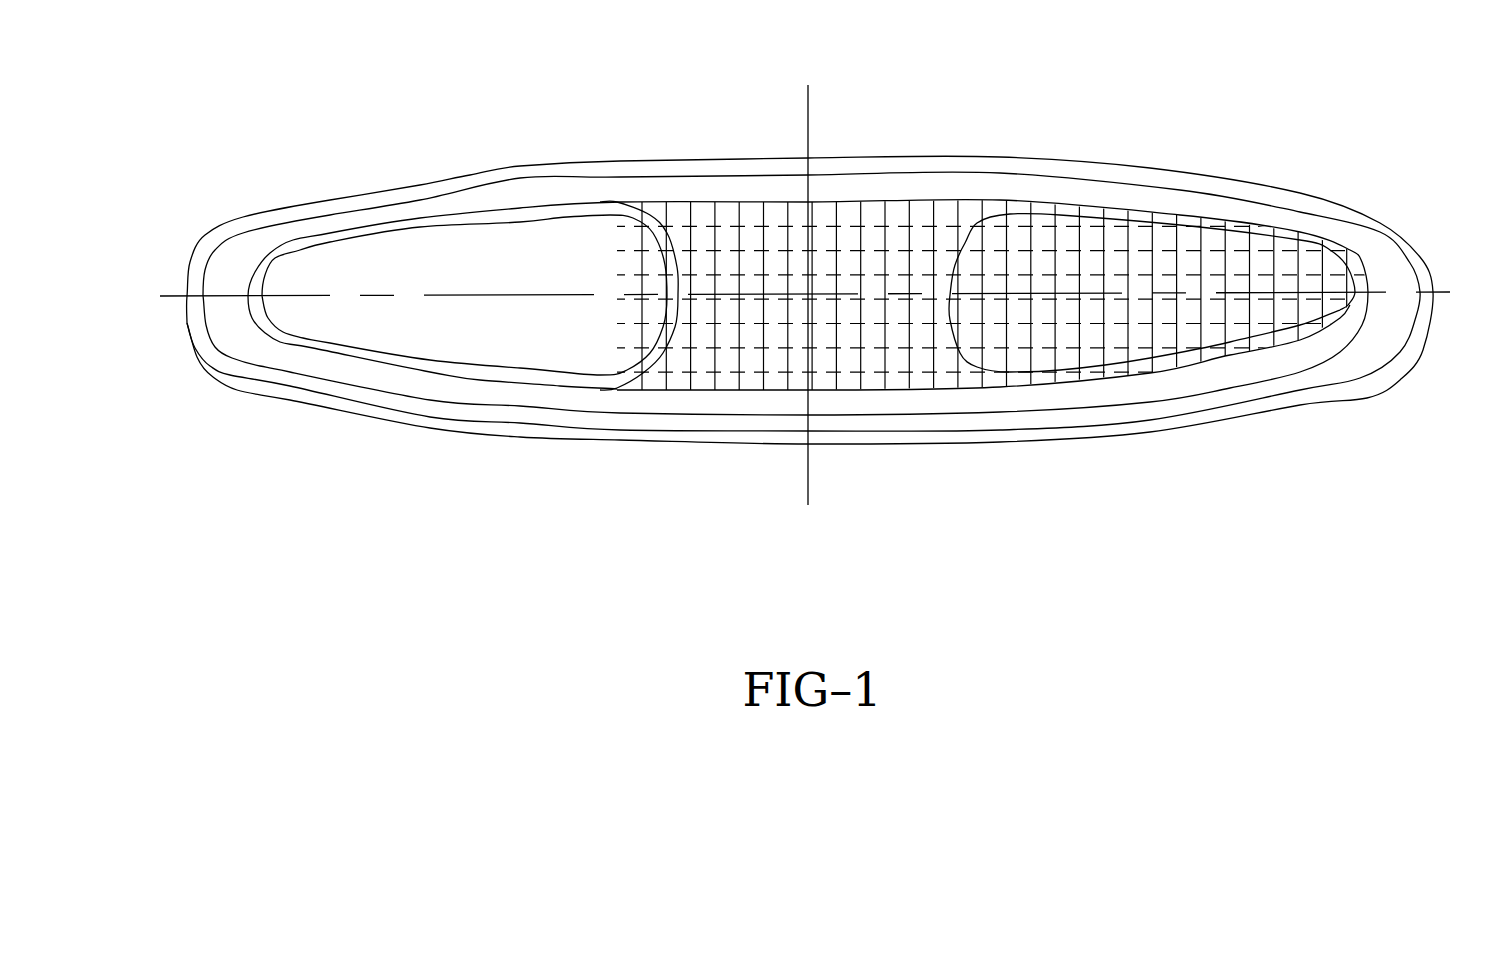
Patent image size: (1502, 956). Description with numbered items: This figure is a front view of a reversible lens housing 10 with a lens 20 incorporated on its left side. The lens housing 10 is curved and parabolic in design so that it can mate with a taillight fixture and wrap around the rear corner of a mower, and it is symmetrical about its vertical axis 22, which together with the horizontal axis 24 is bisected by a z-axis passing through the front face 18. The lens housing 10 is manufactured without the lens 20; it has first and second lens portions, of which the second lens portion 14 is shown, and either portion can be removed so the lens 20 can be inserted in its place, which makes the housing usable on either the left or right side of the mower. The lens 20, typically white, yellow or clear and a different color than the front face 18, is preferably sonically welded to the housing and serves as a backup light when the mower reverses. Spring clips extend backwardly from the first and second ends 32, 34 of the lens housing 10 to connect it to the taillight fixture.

The lens housing 10 is at (377, 438).
The second lens portion 14 is at (1090, 265).
The front face 18 is at (677, 378).
The lens 20 is at (484, 248).
The vertical axis 22 is at (810, 142).
The horizontal axis 24 is at (432, 293).
The first end 32 is at (188, 322).
The second end 34 is at (1436, 264).